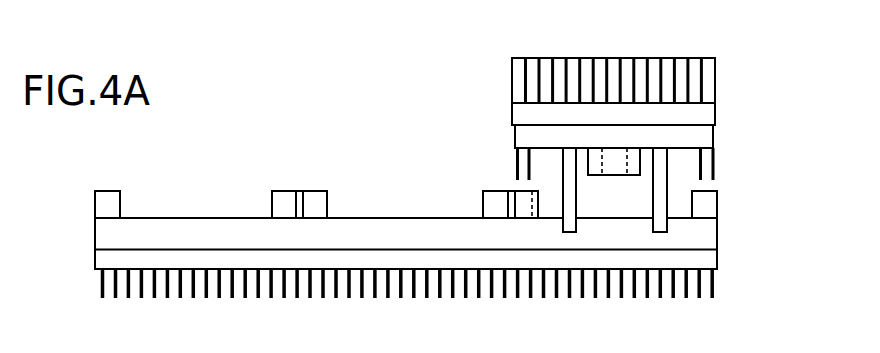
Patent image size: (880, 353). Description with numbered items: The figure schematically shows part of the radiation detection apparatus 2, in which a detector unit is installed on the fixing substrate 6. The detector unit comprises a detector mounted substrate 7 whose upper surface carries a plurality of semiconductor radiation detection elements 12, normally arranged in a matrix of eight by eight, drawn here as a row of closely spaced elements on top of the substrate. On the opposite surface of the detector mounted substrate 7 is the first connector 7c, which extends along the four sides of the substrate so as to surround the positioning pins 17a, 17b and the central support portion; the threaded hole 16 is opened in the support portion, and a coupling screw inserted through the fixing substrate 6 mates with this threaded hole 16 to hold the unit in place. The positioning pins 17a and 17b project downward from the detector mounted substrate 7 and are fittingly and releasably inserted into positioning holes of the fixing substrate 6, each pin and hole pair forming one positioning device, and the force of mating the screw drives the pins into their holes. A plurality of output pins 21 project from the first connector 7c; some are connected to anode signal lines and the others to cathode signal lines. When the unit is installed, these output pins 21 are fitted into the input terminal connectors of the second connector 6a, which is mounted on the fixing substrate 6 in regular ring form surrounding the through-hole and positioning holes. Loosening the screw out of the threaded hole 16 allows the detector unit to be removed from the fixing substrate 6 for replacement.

The radiation detection apparatus 2 is at (758, 210).
The fixing substrate 6 is at (705, 237).
The second connector 6a is at (530, 211).
The detector mounted substrate 7 is at (713, 112).
The first connector 7c is at (522, 138).
The semiconductor radiation detection elements 12 is at (707, 78).
The threaded hole 16 is at (548, 148).
The positioning pin 17a is at (568, 232).
The positioning pin 17b is at (659, 232).
The output pins 21 is at (517, 170).